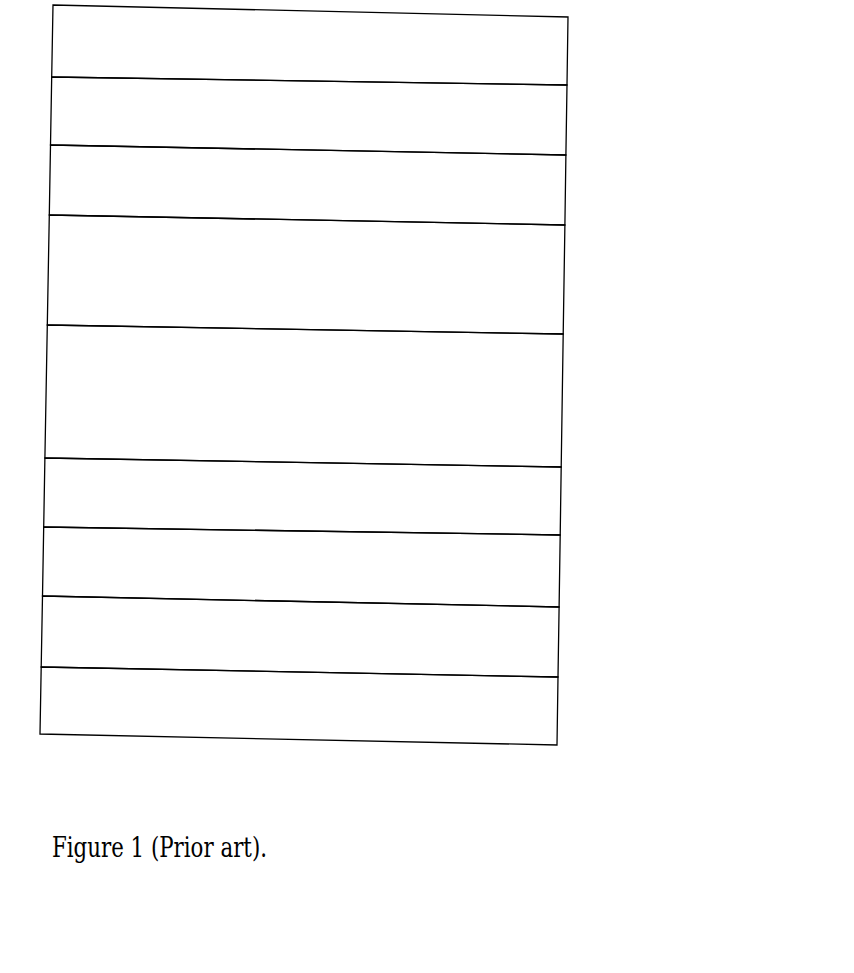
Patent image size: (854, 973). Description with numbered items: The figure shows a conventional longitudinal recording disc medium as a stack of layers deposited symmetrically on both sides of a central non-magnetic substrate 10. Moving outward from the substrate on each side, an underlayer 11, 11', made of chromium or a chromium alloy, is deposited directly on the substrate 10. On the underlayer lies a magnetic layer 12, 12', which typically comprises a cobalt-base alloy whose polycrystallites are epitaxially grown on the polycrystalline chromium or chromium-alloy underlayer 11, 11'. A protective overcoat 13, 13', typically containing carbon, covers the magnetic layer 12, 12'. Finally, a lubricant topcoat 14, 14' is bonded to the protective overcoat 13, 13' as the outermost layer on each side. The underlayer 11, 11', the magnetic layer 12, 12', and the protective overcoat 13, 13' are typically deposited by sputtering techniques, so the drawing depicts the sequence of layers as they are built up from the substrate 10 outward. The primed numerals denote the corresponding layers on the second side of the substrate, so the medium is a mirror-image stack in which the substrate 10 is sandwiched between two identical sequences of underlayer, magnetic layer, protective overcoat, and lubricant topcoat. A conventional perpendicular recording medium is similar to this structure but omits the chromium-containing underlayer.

The lubricant topcoat 14 is at (397, 45).
The protective overcoat 13 is at (396, 116).
The magnetic layer 12 is at (394, 185).
The underlayer 11 is at (393, 274).
The non-magnetic substrate 10 is at (659, 423).
The underlayer 11' is at (393, 496).
The magnetic layer 12' is at (392, 567).
The protective overcoat 13' is at (390, 636).
The lubricant topcoat 14' is at (389, 706).